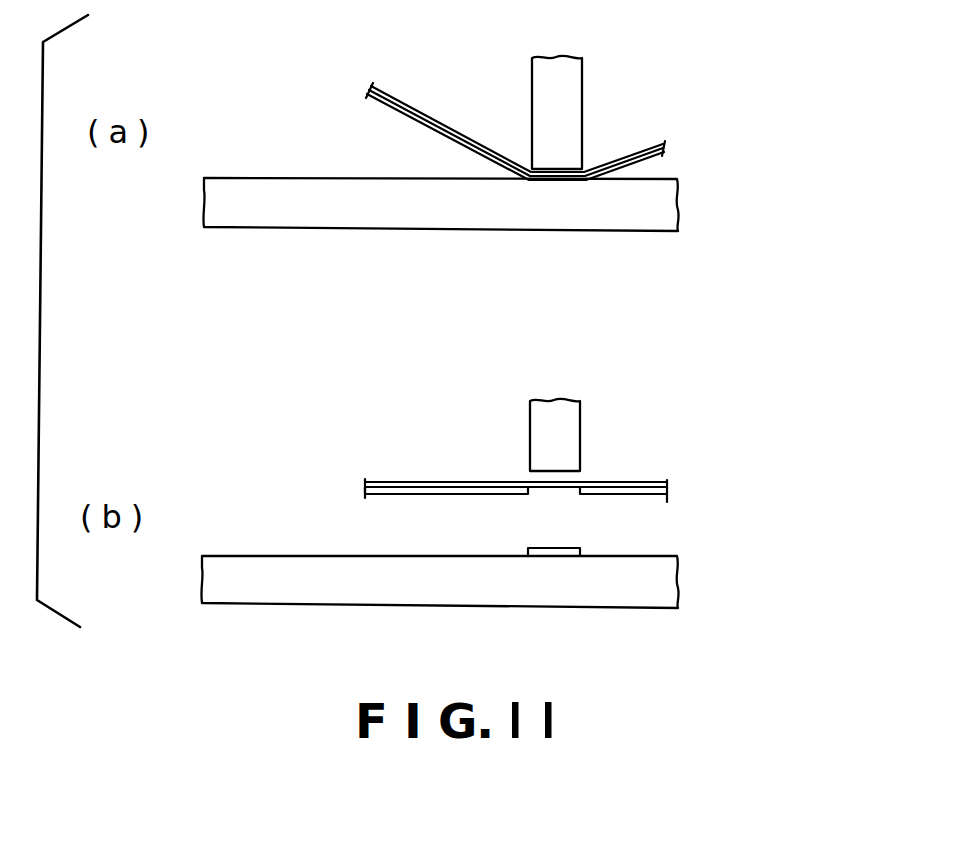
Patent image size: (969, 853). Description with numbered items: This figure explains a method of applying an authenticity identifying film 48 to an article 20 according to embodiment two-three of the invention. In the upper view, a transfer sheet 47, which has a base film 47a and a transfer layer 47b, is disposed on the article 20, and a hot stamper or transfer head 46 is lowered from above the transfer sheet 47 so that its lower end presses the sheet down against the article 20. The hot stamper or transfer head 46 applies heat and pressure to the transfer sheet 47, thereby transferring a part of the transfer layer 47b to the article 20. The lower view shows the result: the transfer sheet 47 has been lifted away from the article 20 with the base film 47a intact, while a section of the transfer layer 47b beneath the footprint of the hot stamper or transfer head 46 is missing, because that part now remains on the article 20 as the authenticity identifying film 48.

The article 20 is at (628, 212).
The hot stamper or transfer head 46 is at (578, 83).
The transfer sheet 47 is at (773, 62).
The base film 47a is at (660, 143).
The transfer layer 47b is at (664, 154).
The authenticity identifying film 48 is at (542, 547).